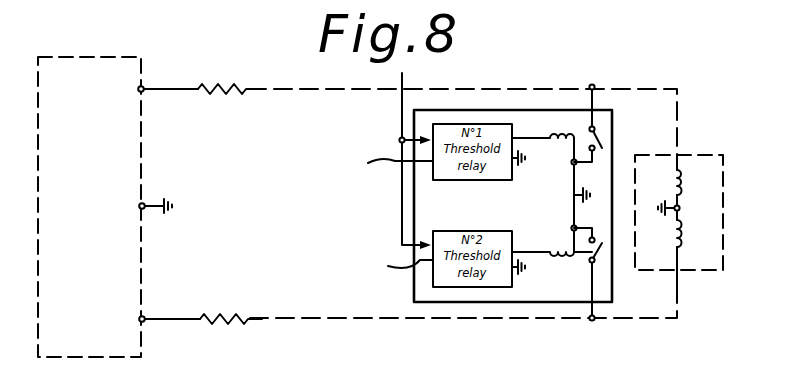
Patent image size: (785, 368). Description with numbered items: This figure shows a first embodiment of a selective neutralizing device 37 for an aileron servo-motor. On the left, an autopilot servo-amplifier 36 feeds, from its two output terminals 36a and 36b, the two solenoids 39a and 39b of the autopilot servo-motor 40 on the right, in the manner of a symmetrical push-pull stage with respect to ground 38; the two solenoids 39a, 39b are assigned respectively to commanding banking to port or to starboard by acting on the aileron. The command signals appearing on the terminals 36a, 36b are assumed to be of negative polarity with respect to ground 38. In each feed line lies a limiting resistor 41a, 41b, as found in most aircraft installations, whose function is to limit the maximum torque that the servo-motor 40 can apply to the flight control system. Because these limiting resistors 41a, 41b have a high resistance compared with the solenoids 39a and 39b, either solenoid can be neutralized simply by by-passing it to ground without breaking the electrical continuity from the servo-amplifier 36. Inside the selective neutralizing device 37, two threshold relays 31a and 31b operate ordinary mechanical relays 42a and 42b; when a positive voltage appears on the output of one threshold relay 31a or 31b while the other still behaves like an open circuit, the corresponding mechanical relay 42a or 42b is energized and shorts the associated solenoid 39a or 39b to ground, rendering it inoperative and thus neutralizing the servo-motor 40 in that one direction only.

The autopilot servo-amplifier 36 is at (82, 63).
The terminal 36a is at (138, 91).
The terminal 36b is at (139, 321).
The ground 38 is at (139, 207).
The limiting resistor 41a is at (224, 77).
The limiting resistor 41b is at (216, 316).
The selective neutralizing device 37 is at (537, 109).
The threshold relay 31a is at (389, 176).
The threshold relay 31b is at (387, 257).
The mechanical relay 42a is at (566, 146).
The mechanical relay 42b is at (562, 246).
The autopilot servo-motor 40 is at (698, 152).
The solenoid 39a is at (686, 176).
The solenoid 39b is at (688, 229).